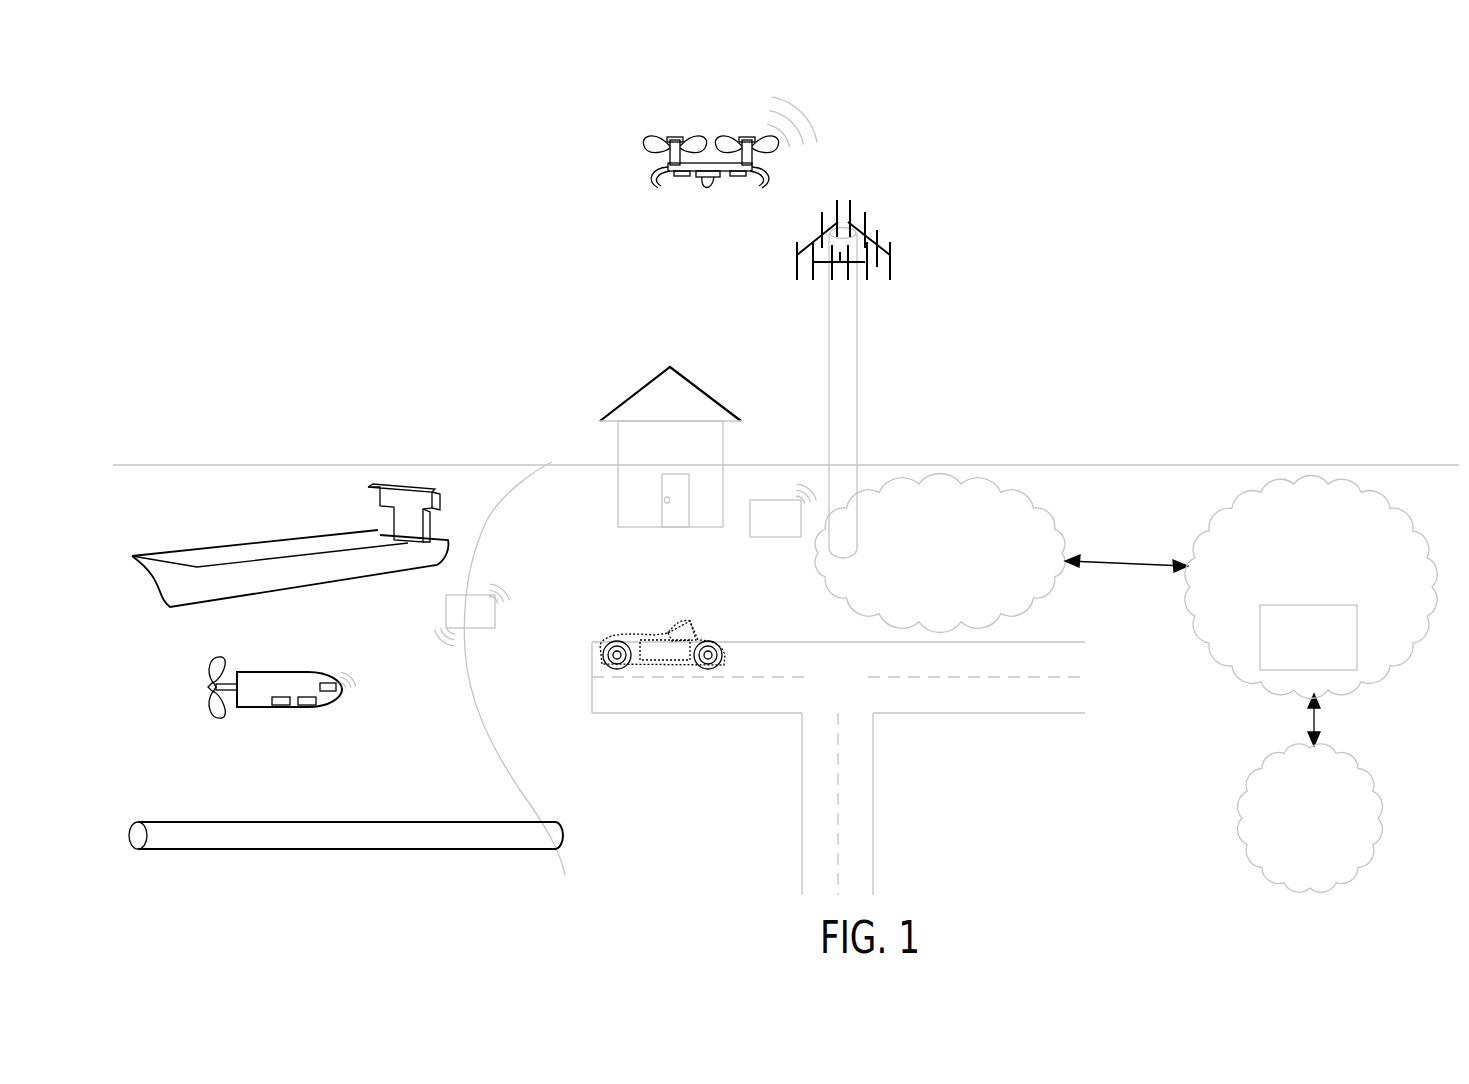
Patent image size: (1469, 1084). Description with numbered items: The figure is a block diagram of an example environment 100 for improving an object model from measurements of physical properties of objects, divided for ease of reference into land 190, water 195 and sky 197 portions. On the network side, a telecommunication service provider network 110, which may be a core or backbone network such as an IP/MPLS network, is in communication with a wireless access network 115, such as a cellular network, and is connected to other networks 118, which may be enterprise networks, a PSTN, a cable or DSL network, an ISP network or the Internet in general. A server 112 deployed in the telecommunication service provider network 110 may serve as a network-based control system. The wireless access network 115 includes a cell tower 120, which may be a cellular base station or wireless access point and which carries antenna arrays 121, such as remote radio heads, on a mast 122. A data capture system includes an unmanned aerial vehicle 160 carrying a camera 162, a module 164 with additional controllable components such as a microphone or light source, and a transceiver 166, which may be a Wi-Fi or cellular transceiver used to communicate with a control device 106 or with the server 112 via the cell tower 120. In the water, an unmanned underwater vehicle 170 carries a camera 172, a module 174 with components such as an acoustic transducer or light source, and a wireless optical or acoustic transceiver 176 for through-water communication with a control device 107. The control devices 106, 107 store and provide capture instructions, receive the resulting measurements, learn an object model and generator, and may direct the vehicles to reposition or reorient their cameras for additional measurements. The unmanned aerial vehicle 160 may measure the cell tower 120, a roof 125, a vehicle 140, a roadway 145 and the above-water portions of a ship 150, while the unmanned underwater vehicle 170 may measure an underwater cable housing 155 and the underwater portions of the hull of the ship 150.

The environment 100 is at (191, 76).
The water 195 is at (193, 516).
The sky 197 is at (515, 204).
The land 190 is at (678, 820).
The ship 150 is at (297, 537).
The unmanned underwater vehicle 170 is at (288, 672).
The camera 172 is at (307, 707).
The module 174 is at (280, 706).
The wireless optical or acoustic transceiver 176 is at (333, 707).
The underwater cable housing 155 is at (345, 850).
The control device 107 is at (488, 622).
The control device 106 is at (793, 527).
The roof 125 is at (648, 383).
The cell tower 120 is at (858, 379).
The antenna arrays 121 is at (893, 268).
The mast 122 is at (858, 372).
The unmanned aerial vehicle 160 is at (668, 170).
The camera 162 is at (706, 183).
The module 164 is at (682, 176).
The transceiver 166 is at (738, 177).
The vehicle 140 is at (598, 632).
The roadway 145 is at (855, 686).
The wireless access network 115 is at (929, 602).
The telecommunication service provider network 110 is at (1296, 597).
The server 112 is at (1293, 663).
The other networks 118 is at (1296, 849).